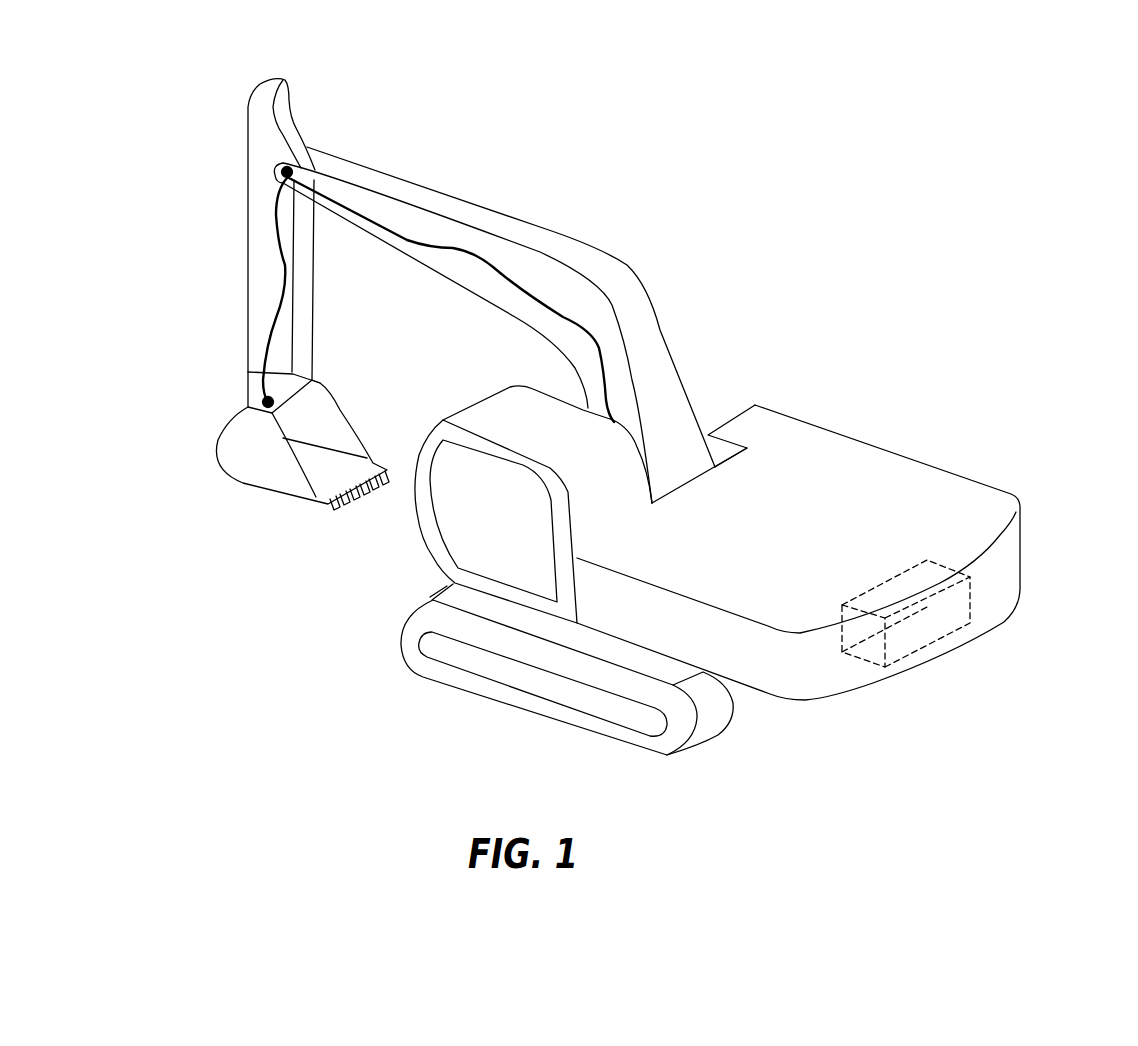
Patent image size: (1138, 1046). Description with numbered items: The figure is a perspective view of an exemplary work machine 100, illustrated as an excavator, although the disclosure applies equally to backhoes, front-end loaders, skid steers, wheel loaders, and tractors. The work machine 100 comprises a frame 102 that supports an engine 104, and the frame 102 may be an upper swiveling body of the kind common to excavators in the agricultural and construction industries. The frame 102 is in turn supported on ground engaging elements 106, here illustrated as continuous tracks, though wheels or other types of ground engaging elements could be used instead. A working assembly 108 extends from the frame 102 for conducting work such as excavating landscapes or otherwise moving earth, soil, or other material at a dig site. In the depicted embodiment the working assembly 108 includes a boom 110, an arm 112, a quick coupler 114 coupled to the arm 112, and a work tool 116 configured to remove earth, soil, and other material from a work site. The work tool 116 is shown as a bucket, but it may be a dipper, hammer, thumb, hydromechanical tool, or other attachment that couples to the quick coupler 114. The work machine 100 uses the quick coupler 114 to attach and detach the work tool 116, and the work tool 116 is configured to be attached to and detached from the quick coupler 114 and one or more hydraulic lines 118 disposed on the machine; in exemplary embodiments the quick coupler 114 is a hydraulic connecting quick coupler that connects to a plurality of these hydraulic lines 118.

The work machine 100 is at (923, 254).
The frame 102 is at (982, 505).
The engine 104 is at (927, 622).
The ground engaging elements 106 is at (663, 747).
The working assembly 108 is at (642, 203).
The boom 110 is at (600, 267).
The arm 112 is at (254, 193).
The quick coupler 114 is at (258, 395).
The work tool 116 is at (232, 462).
The hydraulic lines 118 is at (280, 278).